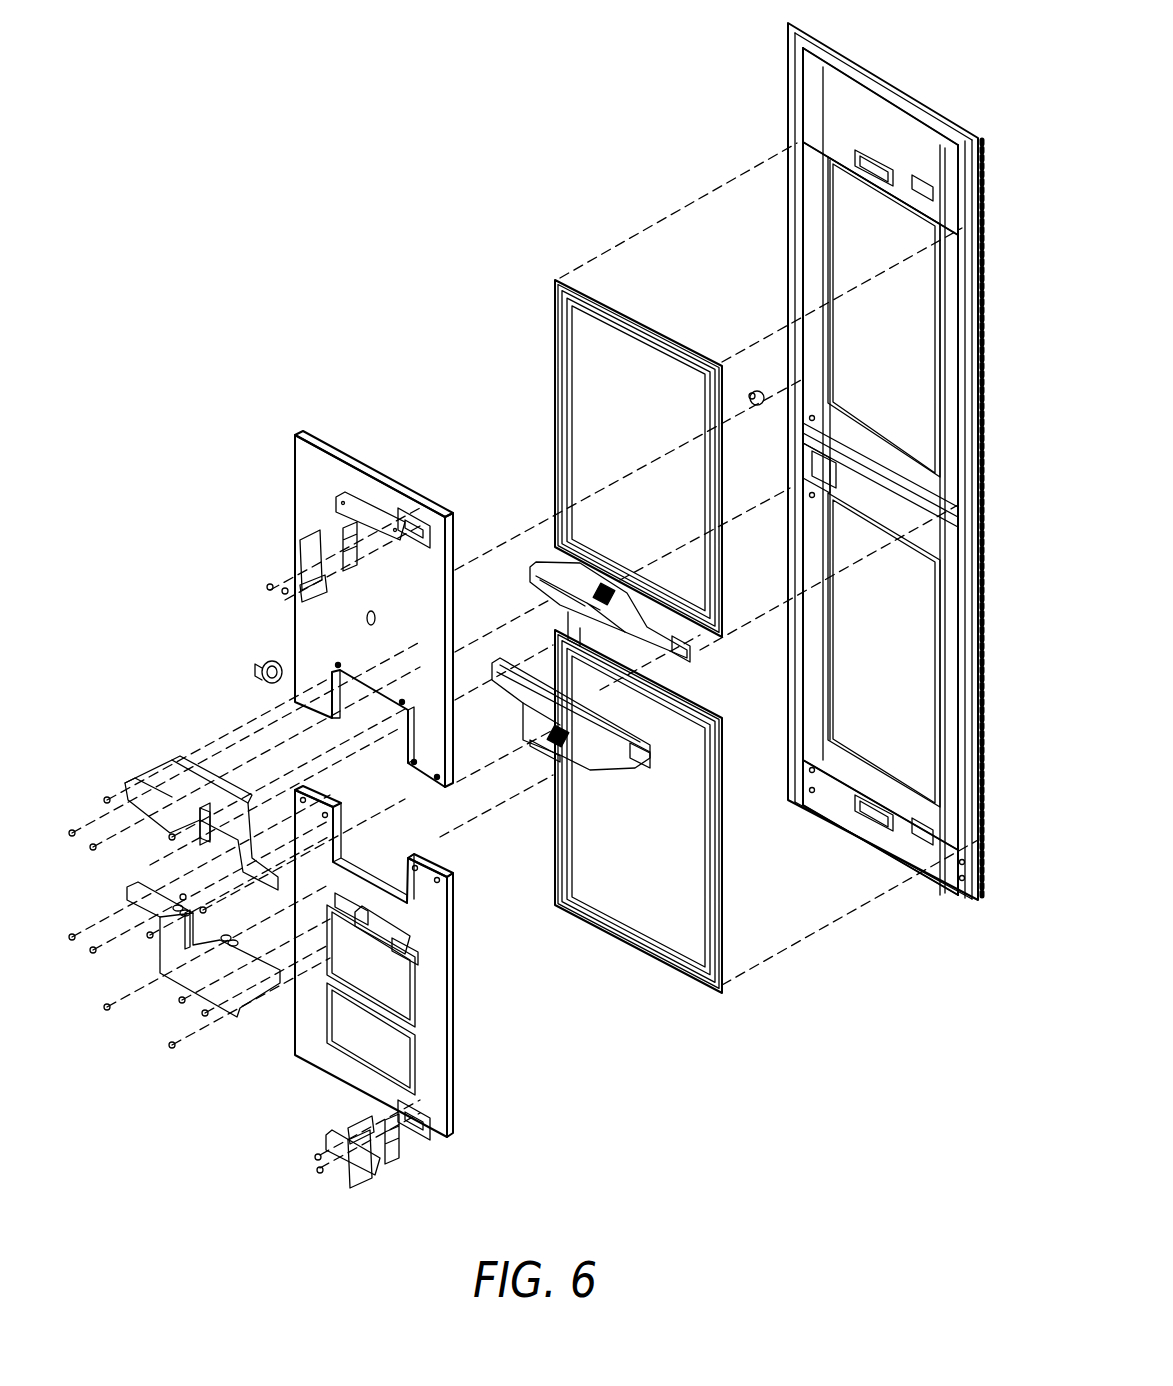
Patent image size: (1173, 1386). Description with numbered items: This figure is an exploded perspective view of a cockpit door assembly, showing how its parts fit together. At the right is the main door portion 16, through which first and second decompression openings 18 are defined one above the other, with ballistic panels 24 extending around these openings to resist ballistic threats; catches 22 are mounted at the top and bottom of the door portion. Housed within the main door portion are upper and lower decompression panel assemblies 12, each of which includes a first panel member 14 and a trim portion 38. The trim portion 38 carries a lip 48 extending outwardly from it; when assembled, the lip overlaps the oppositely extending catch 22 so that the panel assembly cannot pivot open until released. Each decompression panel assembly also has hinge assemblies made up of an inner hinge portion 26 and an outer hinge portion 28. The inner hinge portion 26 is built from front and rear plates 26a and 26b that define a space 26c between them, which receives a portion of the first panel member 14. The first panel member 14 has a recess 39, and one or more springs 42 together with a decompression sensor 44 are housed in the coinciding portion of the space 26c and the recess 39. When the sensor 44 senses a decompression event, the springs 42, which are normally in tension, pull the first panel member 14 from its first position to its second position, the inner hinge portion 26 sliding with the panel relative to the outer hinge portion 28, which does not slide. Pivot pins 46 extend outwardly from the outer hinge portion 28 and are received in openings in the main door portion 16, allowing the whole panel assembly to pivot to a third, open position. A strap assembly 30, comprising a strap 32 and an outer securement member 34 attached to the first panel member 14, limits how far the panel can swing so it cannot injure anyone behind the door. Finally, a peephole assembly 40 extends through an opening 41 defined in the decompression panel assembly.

The decompression panel assembly 12 is at (572, 1052).
The first panel member 14 is at (305, 452).
The main door portion 16 is at (835, 82).
The decompression opening 18 is at (898, 414).
The catch 22 is at (888, 170).
The ballistic panel 24 is at (833, 197).
The inner hinge portion 26 is at (165, 780).
The front plate 26a is at (165, 765).
The rear plate 26b is at (205, 770).
The space 26c is at (178, 750).
The outer hinge portion 28 is at (605, 582).
The strap assembly 30 is at (258, 566).
The strap 32 is at (345, 525).
The outer securement member 34 is at (300, 540).
The trim portion 38 is at (555, 348).
The recess 39 is at (340, 735).
The peephole assembly 40 is at (752, 392).
The opening 41 is at (365, 617).
The spring 42 is at (180, 908).
The decompression sensor 44 is at (558, 745).
The pivot pin 46 is at (688, 655).
The lip 48 is at (612, 300).